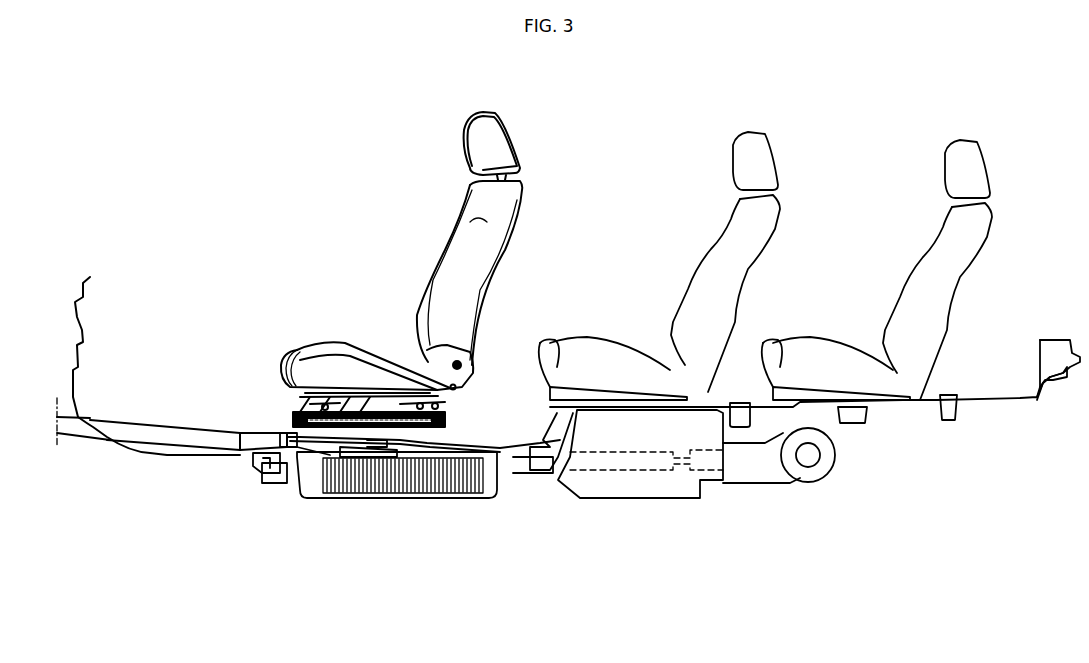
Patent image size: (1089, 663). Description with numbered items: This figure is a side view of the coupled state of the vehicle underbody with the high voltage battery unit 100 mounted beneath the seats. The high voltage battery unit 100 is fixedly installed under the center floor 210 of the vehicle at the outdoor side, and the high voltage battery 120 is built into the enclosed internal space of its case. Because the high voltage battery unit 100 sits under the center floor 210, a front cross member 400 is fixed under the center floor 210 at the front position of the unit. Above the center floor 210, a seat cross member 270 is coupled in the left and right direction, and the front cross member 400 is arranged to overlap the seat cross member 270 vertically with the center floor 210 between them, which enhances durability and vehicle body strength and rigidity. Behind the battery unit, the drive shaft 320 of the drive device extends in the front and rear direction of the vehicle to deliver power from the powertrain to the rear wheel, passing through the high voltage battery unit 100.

The high voltage battery unit 100 is at (397, 522).
The high voltage battery 120 is at (357, 487).
The center floor 210 is at (483, 443).
The seat cross member 270 is at (289, 447).
The drive shaft 320 is at (623, 470).
The front cross member 400 is at (243, 467).